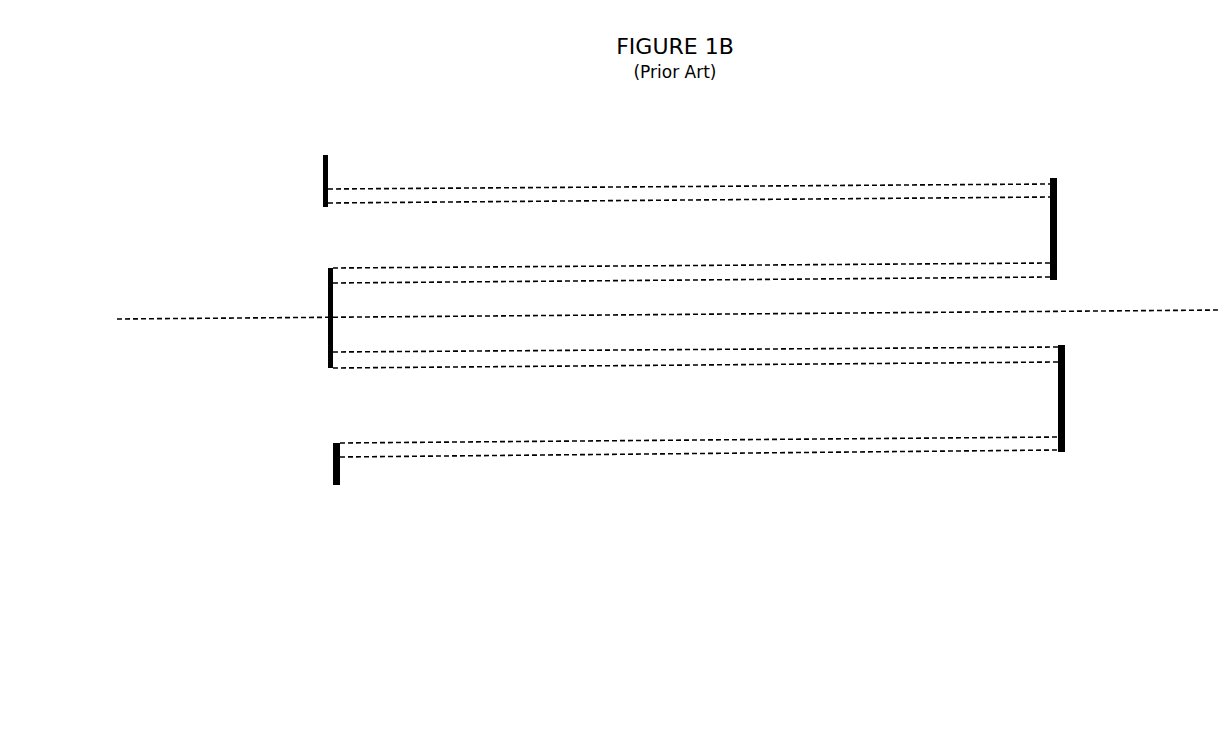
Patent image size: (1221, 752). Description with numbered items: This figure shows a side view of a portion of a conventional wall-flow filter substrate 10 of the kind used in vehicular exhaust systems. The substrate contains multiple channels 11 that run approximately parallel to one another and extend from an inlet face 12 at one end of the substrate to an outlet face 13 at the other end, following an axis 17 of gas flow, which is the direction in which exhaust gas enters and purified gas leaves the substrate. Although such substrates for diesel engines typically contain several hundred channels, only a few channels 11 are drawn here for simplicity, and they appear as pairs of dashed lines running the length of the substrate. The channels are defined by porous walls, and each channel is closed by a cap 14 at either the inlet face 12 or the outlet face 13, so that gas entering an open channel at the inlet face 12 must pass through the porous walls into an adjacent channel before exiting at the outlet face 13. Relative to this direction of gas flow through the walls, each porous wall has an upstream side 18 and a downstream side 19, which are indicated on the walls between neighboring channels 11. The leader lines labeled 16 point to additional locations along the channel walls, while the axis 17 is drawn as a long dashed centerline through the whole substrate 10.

The wall-flow filter substrate 10 is at (1020, 521).
The channels 11 is at (718, 230).
The inlet face 12 is at (302, 475).
The outlet face 13 is at (1089, 396).
The cap 14 is at (328, 362).
The beam paths 16 is at (577, 192).
The axis of gas flow 17 is at (207, 322).
The upstream side 18 is at (450, 272).
The downstream side 19 is at (805, 282).